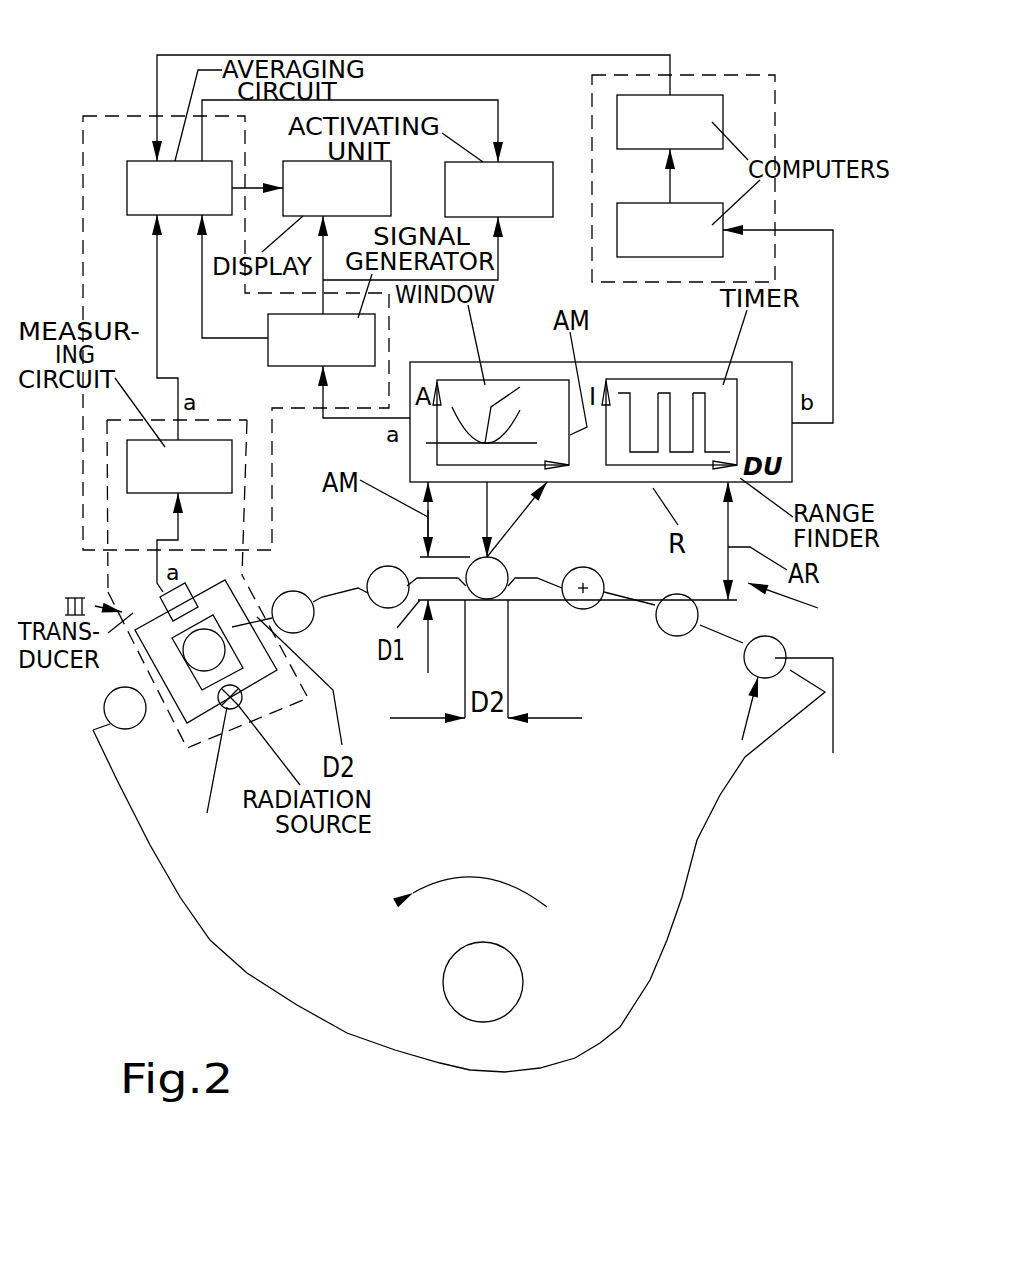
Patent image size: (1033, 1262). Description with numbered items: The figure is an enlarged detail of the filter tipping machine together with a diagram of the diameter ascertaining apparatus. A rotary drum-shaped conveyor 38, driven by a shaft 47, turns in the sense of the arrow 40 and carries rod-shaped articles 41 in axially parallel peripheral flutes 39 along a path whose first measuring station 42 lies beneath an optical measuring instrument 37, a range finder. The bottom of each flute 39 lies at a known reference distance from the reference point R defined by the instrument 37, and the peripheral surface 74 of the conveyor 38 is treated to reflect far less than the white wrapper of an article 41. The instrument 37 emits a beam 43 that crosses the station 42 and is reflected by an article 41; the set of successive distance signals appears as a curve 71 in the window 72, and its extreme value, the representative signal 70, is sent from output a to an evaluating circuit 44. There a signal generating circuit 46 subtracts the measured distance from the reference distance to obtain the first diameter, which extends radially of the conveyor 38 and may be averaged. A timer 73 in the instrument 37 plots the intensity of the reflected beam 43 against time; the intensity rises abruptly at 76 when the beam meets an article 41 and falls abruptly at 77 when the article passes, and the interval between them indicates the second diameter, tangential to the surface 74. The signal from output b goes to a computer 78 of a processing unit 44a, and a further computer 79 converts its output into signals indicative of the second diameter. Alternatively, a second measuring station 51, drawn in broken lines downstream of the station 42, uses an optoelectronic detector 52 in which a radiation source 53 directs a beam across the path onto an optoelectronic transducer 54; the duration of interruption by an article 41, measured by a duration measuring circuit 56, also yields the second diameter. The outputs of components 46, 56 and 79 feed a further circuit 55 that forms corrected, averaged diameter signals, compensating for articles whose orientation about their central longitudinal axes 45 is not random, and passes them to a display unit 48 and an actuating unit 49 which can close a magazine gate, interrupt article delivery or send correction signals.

The optical measuring instrument 37 is at (795, 472).
The rotary drum-shaped conveyor 38 is at (640, 997).
The peripheral flutes 39 is at (742, 740).
The direction of rotation 40 is at (485, 875).
The rod-shaped articles 41 is at (812, 725).
The first measuring station 42 is at (799, 607).
The beam of radiation 43 is at (523, 532).
The evaluating circuit 44 is at (117, 117).
The signal processing unit 44a is at (742, 75).
The central longitudinal axes 45 is at (587, 593).
The signal generating circuit 46 is at (339, 358).
The shaft 47 is at (507, 996).
The display unit 48 is at (354, 206).
The actuating unit 49 is at (516, 206).
The second measuring station 51 is at (138, 663).
The optoelectronic detector 52 is at (187, 732).
The radiation source 53 is at (207, 813).
The optoelectronic transducer 54 is at (168, 600).
The further circuit 55 is at (192, 206).
The duration measuring circuit 56 is at (192, 484).
The representative signal 70 is at (519, 388).
The curve 71 is at (472, 372).
The window 72 is at (486, 386).
The timer 73 is at (747, 413).
The peripheral surface 74 is at (340, 588).
The instant of abrupt intensity increase 76 is at (643, 413).
The instant of abrupt intensity decrease 77 is at (682, 413).
The computer 78 is at (686, 248).
The further computer 79 is at (686, 140).